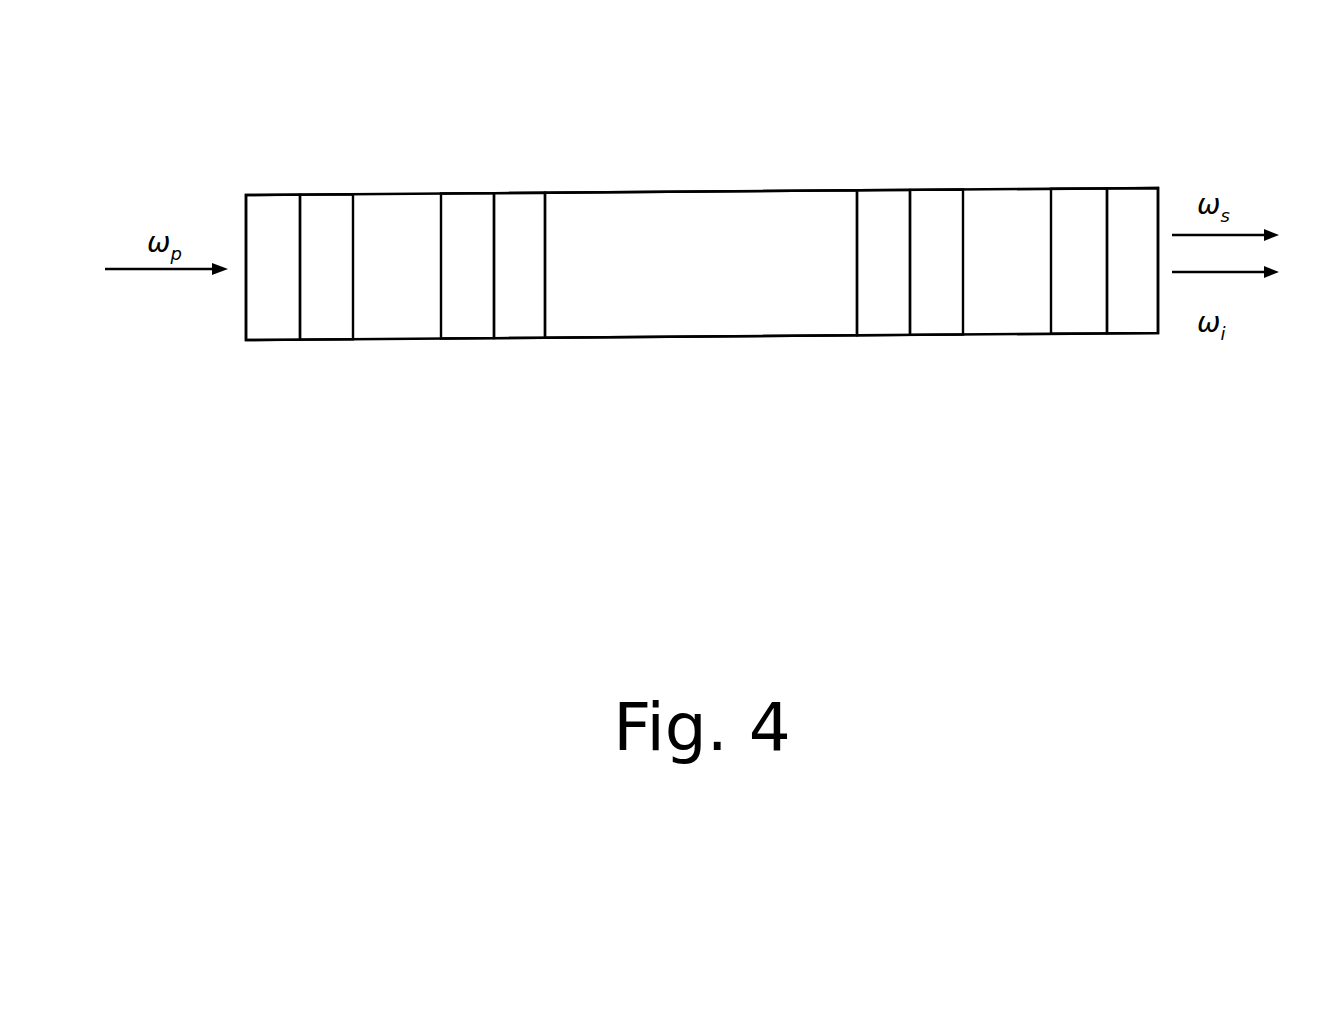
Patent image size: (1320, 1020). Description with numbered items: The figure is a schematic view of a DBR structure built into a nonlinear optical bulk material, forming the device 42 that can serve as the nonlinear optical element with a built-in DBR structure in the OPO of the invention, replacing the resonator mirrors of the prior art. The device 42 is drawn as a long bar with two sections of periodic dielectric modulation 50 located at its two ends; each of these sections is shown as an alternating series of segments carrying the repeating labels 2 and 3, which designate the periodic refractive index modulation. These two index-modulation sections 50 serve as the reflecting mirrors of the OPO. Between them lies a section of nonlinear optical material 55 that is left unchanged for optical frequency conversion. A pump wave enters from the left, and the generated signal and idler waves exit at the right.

The DBR structure device 42 is at (702, 269).
The sections of periodic dielectric modulation 50 is at (702, 207).
The section of nonlinear optical material 55 is at (562, 168).
The refractive index modulation label 2 is at (676, 264).
The refractive index modulation label 3 is at (729, 264).